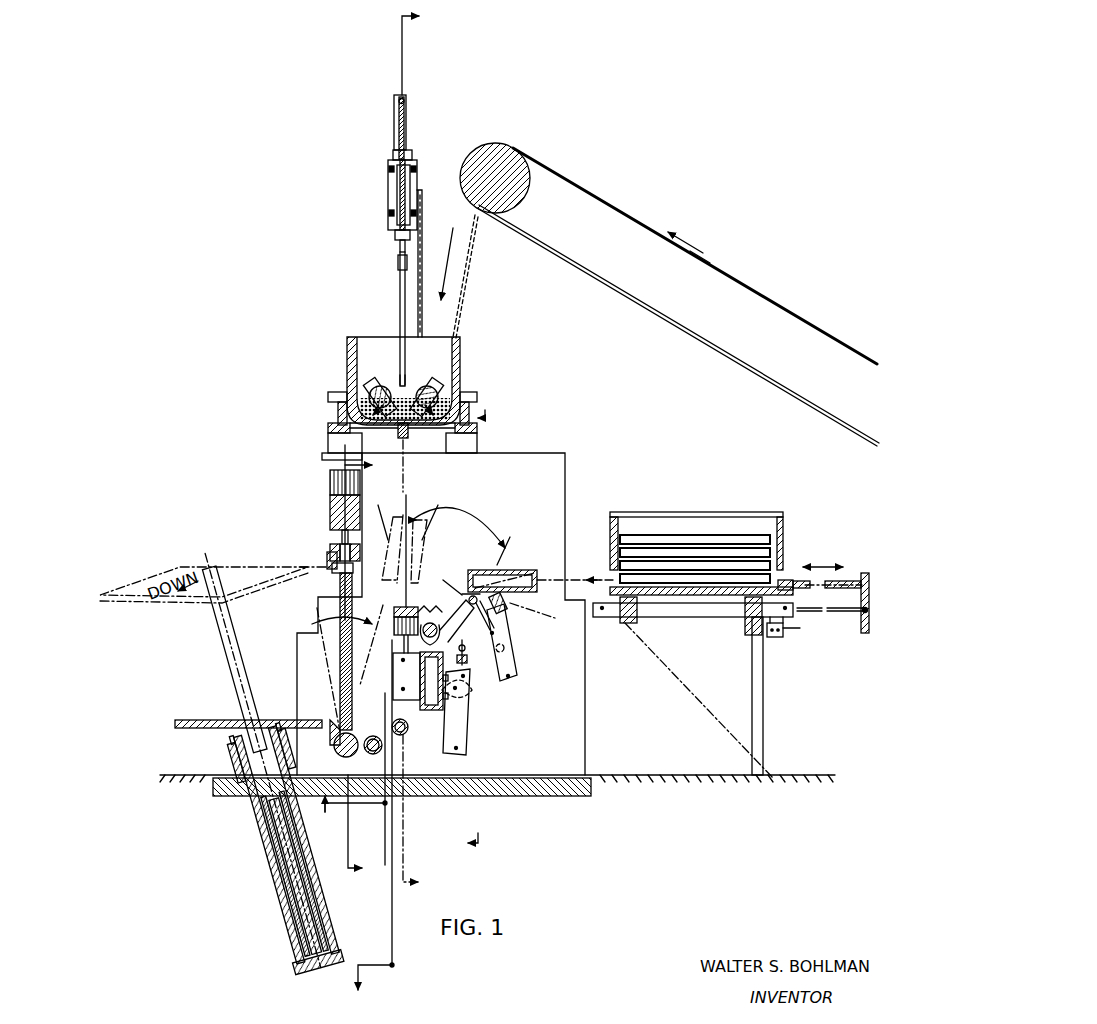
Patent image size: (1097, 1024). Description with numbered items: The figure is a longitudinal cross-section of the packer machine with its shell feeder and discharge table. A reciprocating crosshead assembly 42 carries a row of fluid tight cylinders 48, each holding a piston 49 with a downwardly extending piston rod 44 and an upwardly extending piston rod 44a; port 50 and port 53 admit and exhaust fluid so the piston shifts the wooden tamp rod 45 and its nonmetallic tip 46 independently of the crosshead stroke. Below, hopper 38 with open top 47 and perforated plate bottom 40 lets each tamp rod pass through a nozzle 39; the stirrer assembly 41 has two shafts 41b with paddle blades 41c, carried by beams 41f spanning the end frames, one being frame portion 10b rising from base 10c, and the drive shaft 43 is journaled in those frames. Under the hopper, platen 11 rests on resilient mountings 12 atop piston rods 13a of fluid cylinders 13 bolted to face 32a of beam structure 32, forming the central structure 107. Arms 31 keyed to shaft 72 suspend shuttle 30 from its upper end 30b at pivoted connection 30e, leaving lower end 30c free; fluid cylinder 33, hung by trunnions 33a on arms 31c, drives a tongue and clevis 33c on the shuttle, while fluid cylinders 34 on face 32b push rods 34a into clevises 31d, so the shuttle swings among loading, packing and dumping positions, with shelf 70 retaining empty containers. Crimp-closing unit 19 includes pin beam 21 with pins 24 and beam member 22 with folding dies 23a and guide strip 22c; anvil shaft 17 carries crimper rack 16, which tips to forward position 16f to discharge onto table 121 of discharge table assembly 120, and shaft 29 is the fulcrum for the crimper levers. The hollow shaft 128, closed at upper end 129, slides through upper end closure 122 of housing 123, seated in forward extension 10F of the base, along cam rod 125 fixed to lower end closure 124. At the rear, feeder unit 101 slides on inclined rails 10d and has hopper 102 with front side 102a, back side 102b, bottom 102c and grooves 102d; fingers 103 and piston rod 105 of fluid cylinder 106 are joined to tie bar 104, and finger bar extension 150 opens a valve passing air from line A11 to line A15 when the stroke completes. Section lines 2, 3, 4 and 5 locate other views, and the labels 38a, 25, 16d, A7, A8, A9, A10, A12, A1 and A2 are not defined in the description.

The section line 2— 2 is at (419, 450).
The upwardly extending piston rod 44a is at (407, 120).
The crosshead assembly 42 is at (385, 198).
The port 50 is at (386, 170).
The port 53 is at (386, 215).
The fluid tight cylinder 48 is at (406, 170).
The piston 49 is at (406, 183).
The downwardly extending piston rod 44 is at (399, 250).
The tamp rod 45 is at (400, 290).
The open top of hopper 47 is at (398, 350).
The nonmetallic tip 46 is at (404, 382).
The hopper 38 is at (347, 340).
The conveyor belt 38a is at (600, 200).
The stirrer assembly 41 is at (447, 373).
The stirrer shaft 41b is at (423, 393).
The paddle type blade 41c is at (453, 395).
The beam 41f is at (477, 396).
The nozzle 39 is at (397, 432).
The perforated plate bottom 40 is at (445, 428).
The section line 3— 3 is at (468, 626).
The frame portion 10b is at (567, 453).
The fluid cylinder 106 is at (715, 632).
The section line 4— 4 is at (366, 656).
The section line 5— 5 is at (377, 677).
The knurled knob 25 is at (330, 478).
The pin beam 21 is at (330, 503).
The crimp-closing unit 19 is at (328, 513).
The pin 24 is at (342, 536).
The beam member 22 is at (330, 548).
The folding die 23a is at (327, 560).
The guide strip 22c is at (333, 572).
The crimper rack 16 is at (342, 651).
The forward position of rack 16f is at (318, 660).
The lever position 16d is at (373, 645).
The anvil shaft 17 is at (334, 748).
The horizontal shaft 29 is at (372, 754).
The rotatable shaft 43 is at (404, 733).
The platen 11 is at (394, 612).
The shelf 70 is at (418, 610).
The resilient mounting 12 is at (394, 630).
The fluid cylinder 13 is at (403, 689).
The piston rod 13a is at (403, 660).
The rotatable shaft 72 is at (436, 620).
The horizontal beam structure 32 is at (432, 711).
The face of beam structure 32a is at (425, 688).
The face of beam structure 32b is at (445, 698).
The fluid cylinder 34 is at (468, 745).
The piston rod 34a is at (463, 676).
The air line A10 is at (455, 688).
The air line A9 is at (456, 748).
The fluid cylinder 33 is at (514, 672).
The air line A8 is at (508, 676).
The trunnion 33a is at (505, 649).
The air line A7 is at (492, 633).
The arm 31c is at (506, 622).
The arm 31 is at (506, 605).
The clevis 31d is at (466, 655).
The tongue and clevis 33c is at (468, 600).
The shuttle 30 is at (478, 570).
The upper end of shuttle 30b is at (508, 583).
The lower end of shuttle 30c is at (473, 573).
The pivoted connection 30e is at (595, 578).
The central structure 107 is at (486, 515).
The feeder unit 101 is at (732, 503).
The hopper 102 is at (763, 702).
The front side of hopper 102a is at (612, 520).
The back side of hopper 102b is at (785, 535).
The bottom side of hopper 102c is at (672, 597).
The finger 103 is at (790, 580).
The groove 102d is at (795, 592).
The tie bar 104 is at (862, 578).
The piston rod 105 is at (850, 612).
The finger bar extension 150 is at (866, 632).
The inclined rail 10d is at (702, 707).
The air line A12 is at (602, 608).
The air line A11 is at (785, 608).
The air line A15 is at (770, 637).
The base 10c is at (525, 796).
The forward extension of base 10F is at (238, 790).
The table 121 is at (176, 726).
The upper end of shaft 129 is at (266, 734).
The hollow piston rod 128 is at (248, 738).
The discharge table assembly 120 is at (250, 818).
The upper end closure 122 is at (246, 778).
The cylindrical housing 123 is at (284, 875).
The cam rod 125 is at (298, 906).
The lower end closure 124 is at (300, 972).
The air line A2 is at (351, 789).
The air line A1 is at (367, 830).